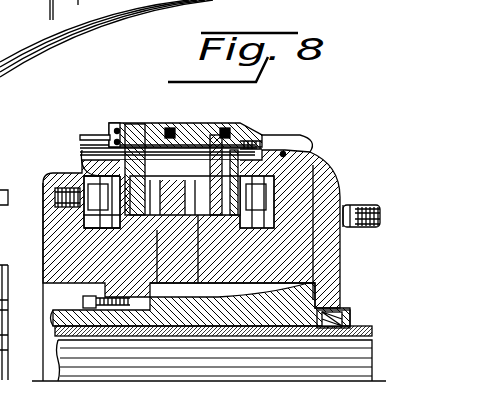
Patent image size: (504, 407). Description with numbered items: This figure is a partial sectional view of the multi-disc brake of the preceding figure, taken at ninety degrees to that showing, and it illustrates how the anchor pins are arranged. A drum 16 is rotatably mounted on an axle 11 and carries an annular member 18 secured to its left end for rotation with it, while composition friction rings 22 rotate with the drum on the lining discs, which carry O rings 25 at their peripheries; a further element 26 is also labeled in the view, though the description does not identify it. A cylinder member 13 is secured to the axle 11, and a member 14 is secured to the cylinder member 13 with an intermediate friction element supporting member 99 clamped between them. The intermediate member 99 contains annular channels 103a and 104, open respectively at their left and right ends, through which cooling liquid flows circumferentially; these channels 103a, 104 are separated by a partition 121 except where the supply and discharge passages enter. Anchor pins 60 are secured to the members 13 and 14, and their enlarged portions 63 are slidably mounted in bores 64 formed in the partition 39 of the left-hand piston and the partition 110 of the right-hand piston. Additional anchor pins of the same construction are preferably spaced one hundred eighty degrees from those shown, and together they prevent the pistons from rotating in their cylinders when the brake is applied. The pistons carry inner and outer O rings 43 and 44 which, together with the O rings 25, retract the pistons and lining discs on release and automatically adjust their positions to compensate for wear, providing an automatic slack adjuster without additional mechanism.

The axle 11 is at (250, 340).
The cylinder member 13 is at (42, 238).
The member 14 is at (343, 263).
The drum 16 is at (343, 283).
The annular member 18 is at (118, 122).
The composition friction rings 22 is at (136, 140).
The O rings 25 is at (171, 127).
The wheel 26 is at (7, 175).
The partition 39 is at (82, 216).
The inner O ring 43 is at (102, 277).
The outer O ring 44 is at (92, 151).
The anchor pins 60 is at (53, 175).
The enlarged portions 63 is at (179, 202).
The bores 64 is at (78, 139).
The intermediate friction element supporting member 99 is at (184, 334).
The channel 103a is at (136, 256).
The channel 104 is at (218, 249).
The partition 110 is at (293, 232).
The partition 121 is at (193, 145).